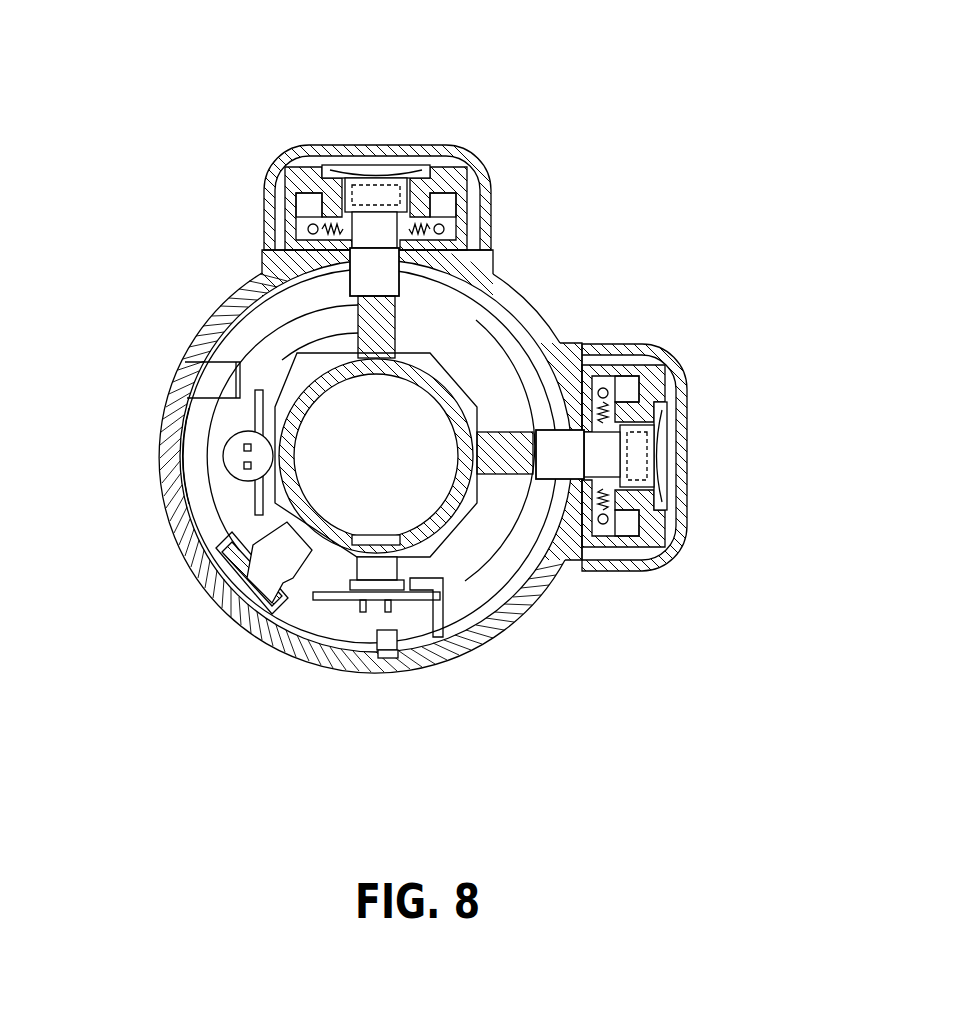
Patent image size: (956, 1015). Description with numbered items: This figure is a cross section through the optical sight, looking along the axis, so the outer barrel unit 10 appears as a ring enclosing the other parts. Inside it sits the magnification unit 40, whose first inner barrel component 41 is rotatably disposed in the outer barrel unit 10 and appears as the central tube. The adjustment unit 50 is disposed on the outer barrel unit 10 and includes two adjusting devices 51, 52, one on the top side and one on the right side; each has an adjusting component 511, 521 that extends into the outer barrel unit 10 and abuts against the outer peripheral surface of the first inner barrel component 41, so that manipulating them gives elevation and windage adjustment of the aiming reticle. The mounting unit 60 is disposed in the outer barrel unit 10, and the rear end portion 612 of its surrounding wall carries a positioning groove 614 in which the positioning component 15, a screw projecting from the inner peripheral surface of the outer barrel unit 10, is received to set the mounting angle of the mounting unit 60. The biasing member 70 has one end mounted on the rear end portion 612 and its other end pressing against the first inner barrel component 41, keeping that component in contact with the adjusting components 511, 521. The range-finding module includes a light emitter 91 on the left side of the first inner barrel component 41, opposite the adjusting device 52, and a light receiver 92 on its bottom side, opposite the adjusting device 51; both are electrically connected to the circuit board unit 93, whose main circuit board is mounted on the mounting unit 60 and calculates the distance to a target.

The outer barrel unit 10 is at (215, 290).
The positioning component 15 is at (390, 648).
The magnification unit 40 is at (437, 372).
The first inner barrel component 41 is at (458, 403).
The adjustment unit 50 is at (377, 186).
The adjusting device 51 is at (420, 160).
The adjusting component 511 is at (372, 258).
The adjusting device 52 is at (664, 457).
The adjusting component 521 is at (557, 458).
The mounting unit 60 is at (312, 456).
The rear end portion 612 is at (197, 475).
The positioning groove 614 is at (380, 636).
The biasing member 70 is at (292, 555).
The light emitter 91 is at (233, 450).
The light receiver 92 is at (370, 568).
The circuit board unit 93 is at (232, 383).